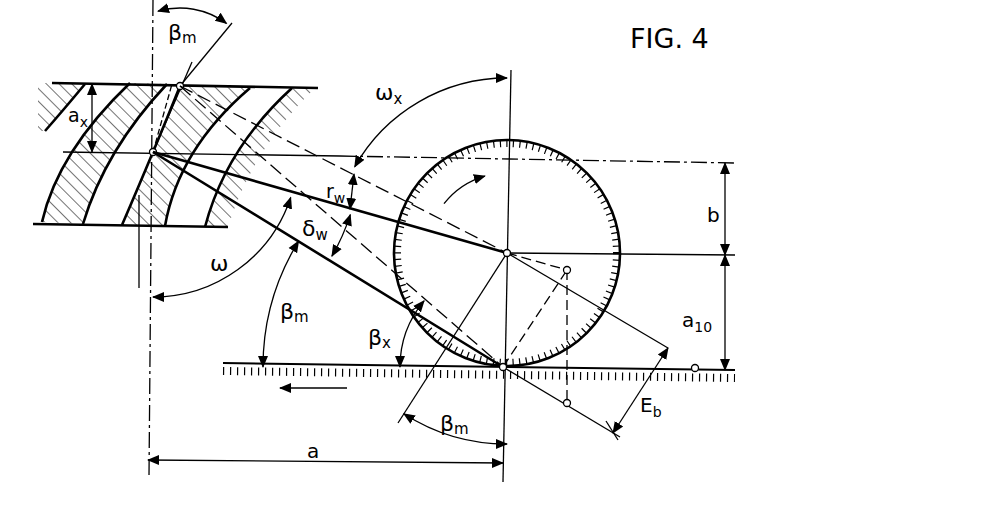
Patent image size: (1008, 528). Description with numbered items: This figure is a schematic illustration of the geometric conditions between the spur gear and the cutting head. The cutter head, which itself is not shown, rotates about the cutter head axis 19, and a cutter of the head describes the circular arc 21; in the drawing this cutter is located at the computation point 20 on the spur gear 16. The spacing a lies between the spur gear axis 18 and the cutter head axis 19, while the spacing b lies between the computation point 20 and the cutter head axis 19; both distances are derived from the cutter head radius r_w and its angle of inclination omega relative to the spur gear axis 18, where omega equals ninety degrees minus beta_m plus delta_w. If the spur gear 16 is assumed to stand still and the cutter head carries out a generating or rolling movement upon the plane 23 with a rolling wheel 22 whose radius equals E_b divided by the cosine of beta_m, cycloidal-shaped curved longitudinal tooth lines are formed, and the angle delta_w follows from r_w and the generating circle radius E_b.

The spur gear 16 is at (105, 81).
The spur gear axis 18 is at (148, 357).
The cutter head axis 19 is at (511, 250).
The computation point 20 is at (150, 154).
The circular arc 21 is at (139, 276).
The rolling wheel 22 is at (620, 224).
The plane 23 is at (696, 372).